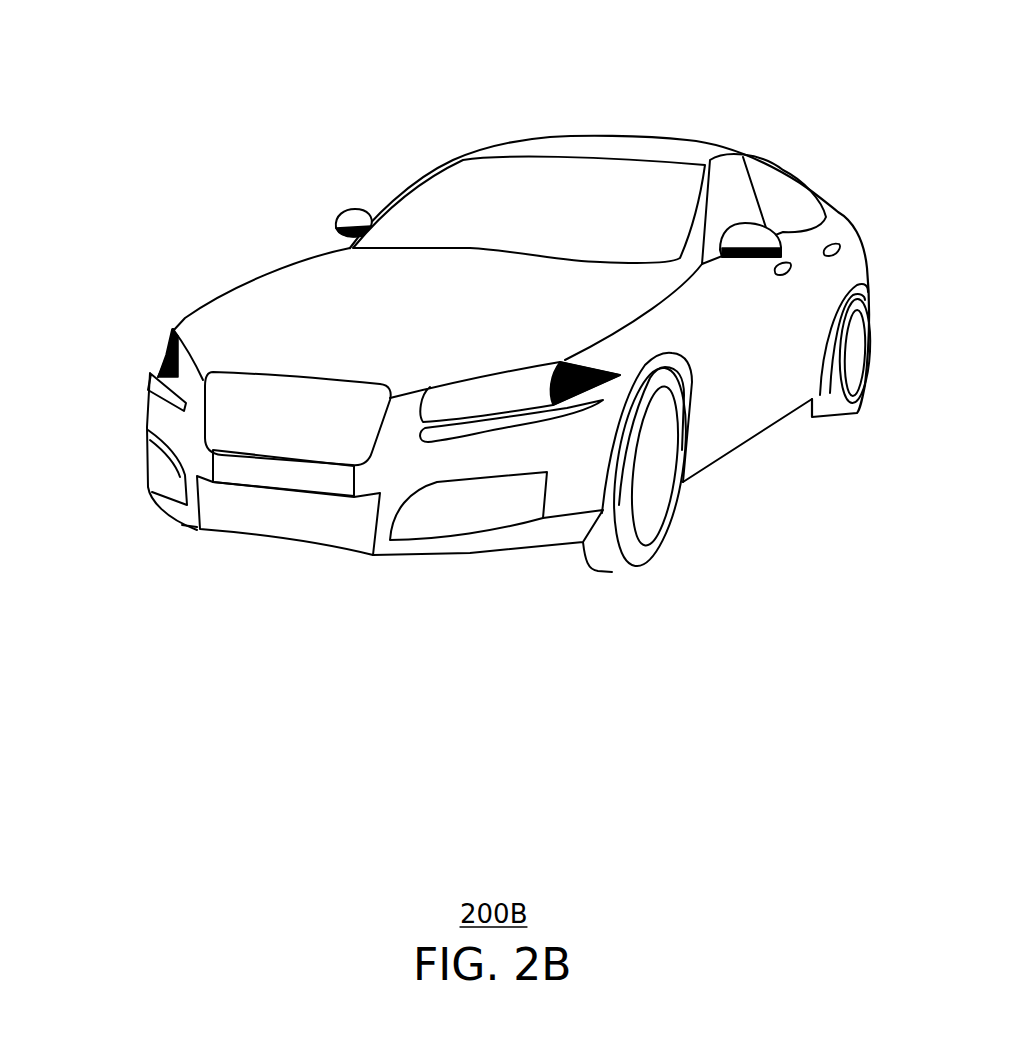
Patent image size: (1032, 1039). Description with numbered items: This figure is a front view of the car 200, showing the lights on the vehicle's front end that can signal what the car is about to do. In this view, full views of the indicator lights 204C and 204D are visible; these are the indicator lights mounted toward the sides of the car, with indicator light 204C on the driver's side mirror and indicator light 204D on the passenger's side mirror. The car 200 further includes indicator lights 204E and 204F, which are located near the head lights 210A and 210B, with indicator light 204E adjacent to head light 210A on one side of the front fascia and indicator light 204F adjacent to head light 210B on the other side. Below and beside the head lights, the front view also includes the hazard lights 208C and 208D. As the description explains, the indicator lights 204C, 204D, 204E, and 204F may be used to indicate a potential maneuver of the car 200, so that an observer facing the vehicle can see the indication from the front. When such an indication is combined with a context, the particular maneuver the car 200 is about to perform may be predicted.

The car 200 is at (476, 300).
The indicator light 204C is at (337, 229).
The indicator light 204D is at (765, 238).
The indicator light 204E is at (167, 347).
The indicator light 204F is at (603, 362).
The hazard light 208C is at (153, 402).
The hazard light 208D is at (516, 432).
The head light 210A is at (177, 370).
The head light 210B is at (537, 412).